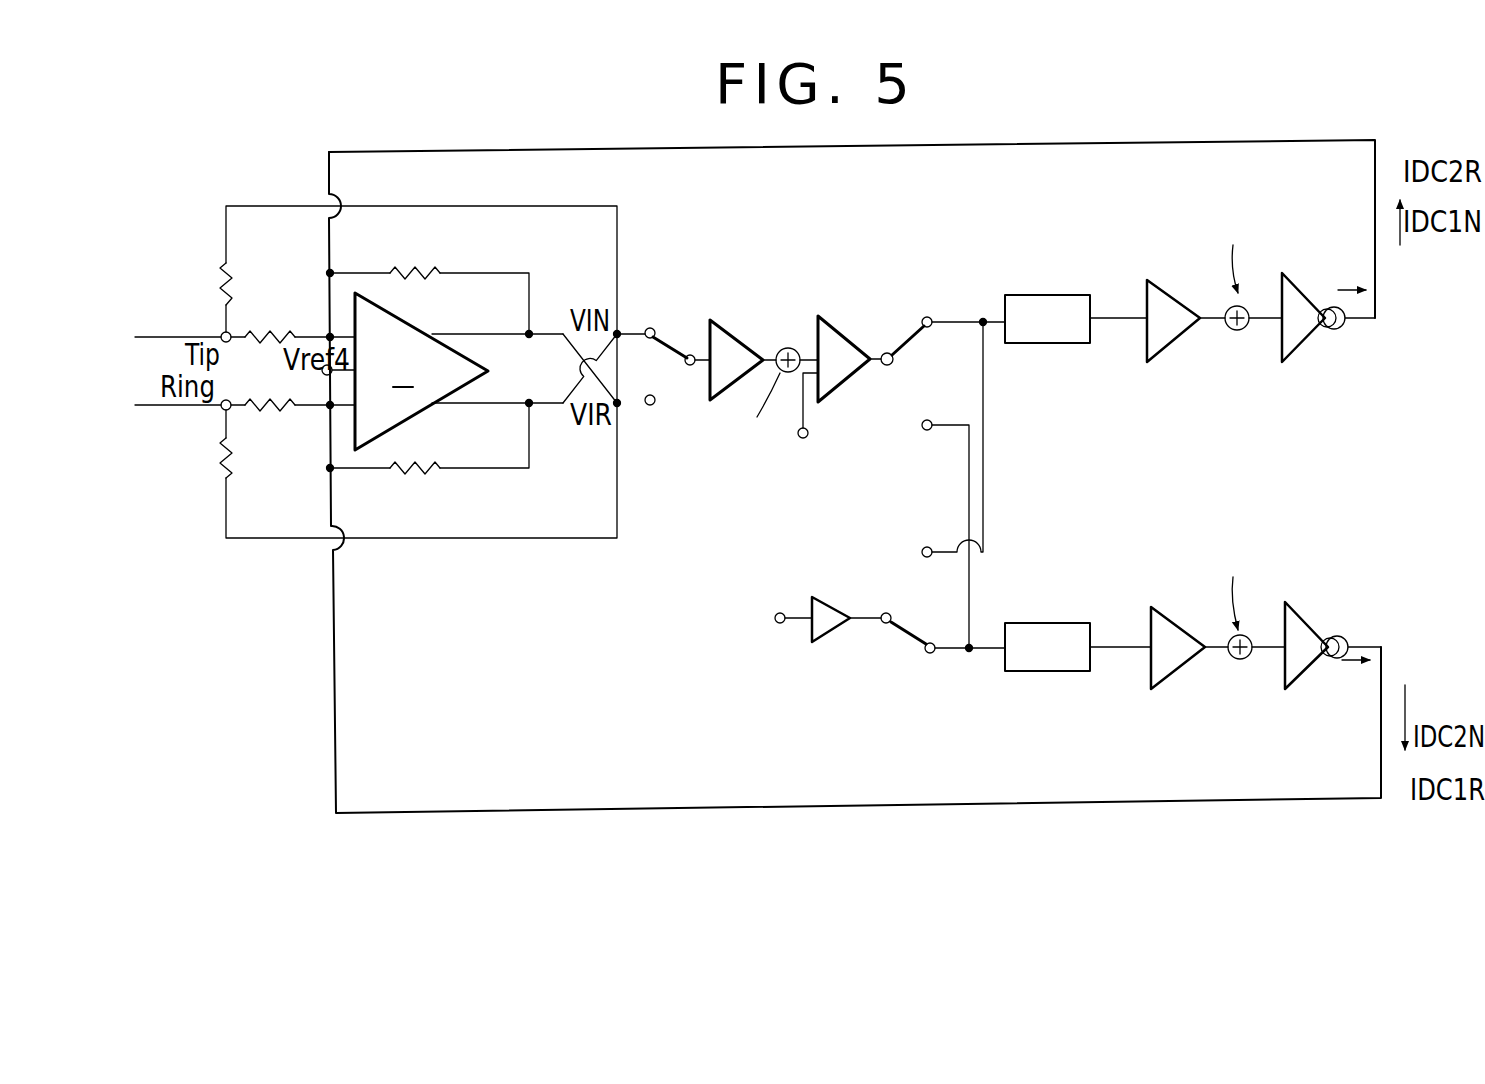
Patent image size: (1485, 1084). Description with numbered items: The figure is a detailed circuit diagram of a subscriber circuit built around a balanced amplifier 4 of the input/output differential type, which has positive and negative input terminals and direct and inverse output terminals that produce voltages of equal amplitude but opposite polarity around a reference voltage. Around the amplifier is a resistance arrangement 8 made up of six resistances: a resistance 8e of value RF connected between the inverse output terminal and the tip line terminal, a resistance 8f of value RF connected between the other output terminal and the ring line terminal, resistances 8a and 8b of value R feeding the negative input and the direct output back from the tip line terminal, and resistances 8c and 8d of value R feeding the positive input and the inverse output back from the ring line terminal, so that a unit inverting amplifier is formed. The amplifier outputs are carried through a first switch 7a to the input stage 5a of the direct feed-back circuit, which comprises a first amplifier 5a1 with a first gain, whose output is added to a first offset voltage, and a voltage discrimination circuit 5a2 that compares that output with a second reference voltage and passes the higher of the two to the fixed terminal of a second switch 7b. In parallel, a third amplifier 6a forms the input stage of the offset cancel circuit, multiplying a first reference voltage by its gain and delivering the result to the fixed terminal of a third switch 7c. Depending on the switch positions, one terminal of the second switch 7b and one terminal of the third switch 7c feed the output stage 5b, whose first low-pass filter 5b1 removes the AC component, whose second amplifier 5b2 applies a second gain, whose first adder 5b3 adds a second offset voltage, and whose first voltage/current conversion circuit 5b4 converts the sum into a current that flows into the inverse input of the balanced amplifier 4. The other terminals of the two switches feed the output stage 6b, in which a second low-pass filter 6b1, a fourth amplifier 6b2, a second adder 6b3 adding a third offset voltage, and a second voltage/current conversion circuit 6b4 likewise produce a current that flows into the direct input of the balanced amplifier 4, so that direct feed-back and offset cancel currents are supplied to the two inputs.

The balanced amplifier 4 is at (425, 331).
The input resistor network 8 is at (265, 548).
The resistance 8a is at (273, 333).
The resistance 8b is at (430, 273).
The resistance 8c is at (278, 412).
The resistance 8d is at (428, 473).
The resistance 8e is at (228, 265).
The resistance 8f is at (222, 470).
The switch 7a is at (655, 350).
The second switch 7b is at (912, 340).
The third switch 7c is at (887, 627).
The input stage 5a is at (777, 307).
The first amplifier 5a1 is at (733, 332).
The voltage discrimination circuit 5a2 is at (843, 332).
The output stage 5b is at (1110, 292).
The first low-pass filter 5b1 is at (1047, 343).
The second amplifier 5b2 is at (1168, 348).
The first adder 5b3 is at (1237, 333).
The first voltage/current conversion circuit 5b4 is at (1312, 338).
The third amplifier 6a is at (827, 636).
The output stage 6b is at (1145, 757).
The second low-pass filter 6b1 is at (1047, 671).
The fourth amplifier 6b2 is at (1168, 680).
The second adder 6b3 is at (1238, 660).
The second voltage/current conversion circuit 6b4 is at (1312, 672).